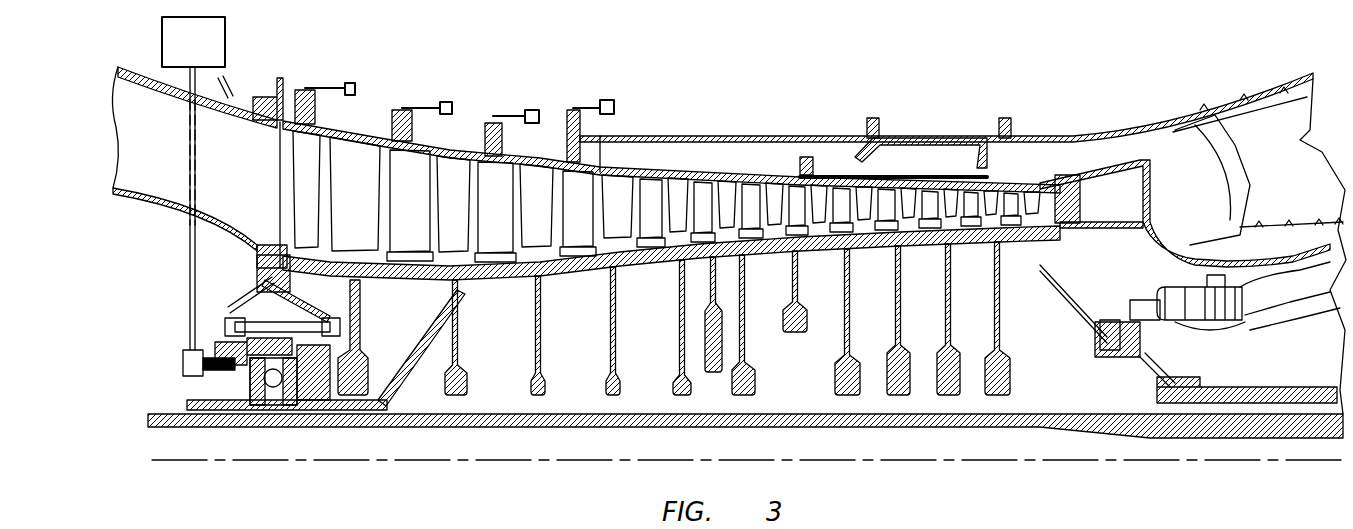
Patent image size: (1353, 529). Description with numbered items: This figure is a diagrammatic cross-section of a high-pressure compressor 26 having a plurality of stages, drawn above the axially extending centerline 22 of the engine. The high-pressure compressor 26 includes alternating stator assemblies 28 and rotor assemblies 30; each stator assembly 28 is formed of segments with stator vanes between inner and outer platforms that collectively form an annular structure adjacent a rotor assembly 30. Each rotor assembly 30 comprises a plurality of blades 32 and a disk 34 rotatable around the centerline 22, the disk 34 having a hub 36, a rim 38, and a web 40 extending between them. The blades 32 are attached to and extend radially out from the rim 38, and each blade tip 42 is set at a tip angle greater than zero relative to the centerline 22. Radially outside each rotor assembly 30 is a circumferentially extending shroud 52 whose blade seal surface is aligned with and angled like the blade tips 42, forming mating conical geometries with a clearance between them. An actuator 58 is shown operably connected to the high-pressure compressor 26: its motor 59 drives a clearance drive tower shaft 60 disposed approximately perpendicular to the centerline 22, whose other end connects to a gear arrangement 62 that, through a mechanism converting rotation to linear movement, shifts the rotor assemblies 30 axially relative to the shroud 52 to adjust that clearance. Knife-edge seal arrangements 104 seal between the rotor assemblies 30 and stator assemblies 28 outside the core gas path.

The axially extending centerline 22 is at (182, 463).
The high-pressure compressor 26 is at (802, 82).
The stator assembly 28 is at (648, 186).
The rotor assembly 30 is at (538, 402).
The blade 32 is at (458, 165).
The disk 34 is at (598, 360).
The hub 36 is at (531, 385).
The rim 38 is at (530, 280).
The web 40 is at (611, 306).
The blade tip 42 is at (554, 160).
The shroud 52 is at (357, 138).
The actuator 58 is at (183, 325).
The motor 59 is at (207, 53).
The clearance drive tower shaft 60 is at (190, 288).
The gear arrangement 62 is at (183, 360).
The knife-edge seal arrangement 104 is at (402, 292).